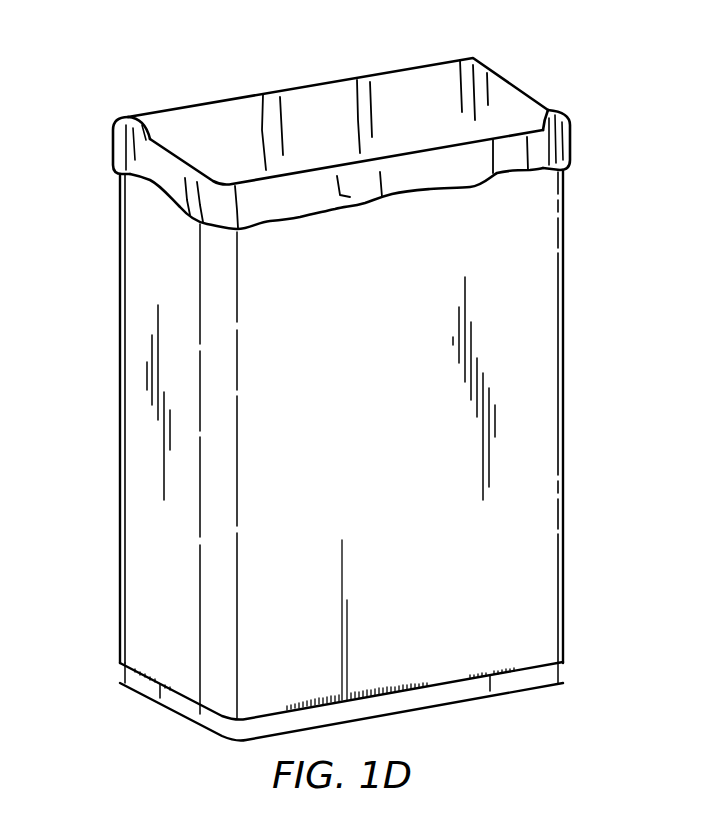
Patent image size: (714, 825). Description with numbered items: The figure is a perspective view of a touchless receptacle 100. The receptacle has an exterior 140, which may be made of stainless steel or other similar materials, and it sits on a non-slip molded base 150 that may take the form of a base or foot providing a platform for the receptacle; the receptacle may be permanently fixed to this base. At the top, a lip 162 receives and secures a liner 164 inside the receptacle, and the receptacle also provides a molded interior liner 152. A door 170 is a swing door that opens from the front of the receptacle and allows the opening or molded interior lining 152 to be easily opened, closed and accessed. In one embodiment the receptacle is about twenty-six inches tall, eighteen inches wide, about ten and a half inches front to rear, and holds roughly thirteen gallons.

The touchless receptacle 100 is at (246, 40).
The exterior 140 is at (565, 305).
The non-slip molded base 150 is at (562, 676).
The molded interior liner 152 is at (383, 93).
The lip 162 is at (130, 152).
The liner 164 is at (222, 128).
The door 170 is at (538, 209).